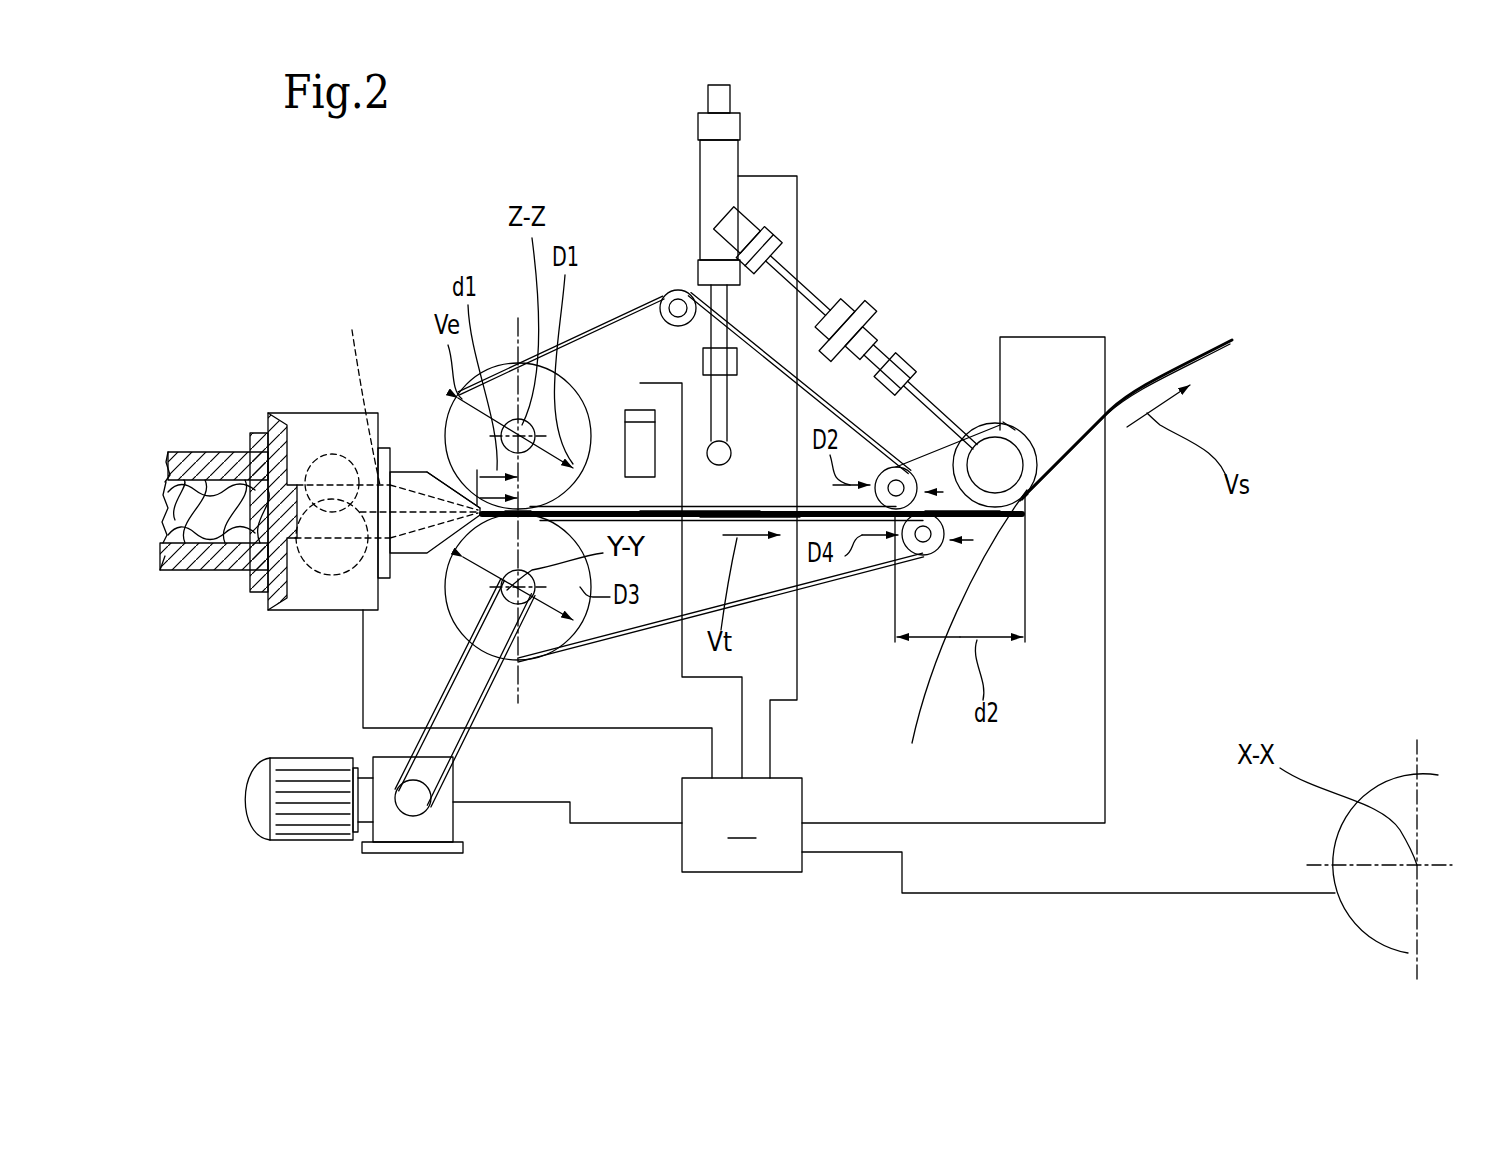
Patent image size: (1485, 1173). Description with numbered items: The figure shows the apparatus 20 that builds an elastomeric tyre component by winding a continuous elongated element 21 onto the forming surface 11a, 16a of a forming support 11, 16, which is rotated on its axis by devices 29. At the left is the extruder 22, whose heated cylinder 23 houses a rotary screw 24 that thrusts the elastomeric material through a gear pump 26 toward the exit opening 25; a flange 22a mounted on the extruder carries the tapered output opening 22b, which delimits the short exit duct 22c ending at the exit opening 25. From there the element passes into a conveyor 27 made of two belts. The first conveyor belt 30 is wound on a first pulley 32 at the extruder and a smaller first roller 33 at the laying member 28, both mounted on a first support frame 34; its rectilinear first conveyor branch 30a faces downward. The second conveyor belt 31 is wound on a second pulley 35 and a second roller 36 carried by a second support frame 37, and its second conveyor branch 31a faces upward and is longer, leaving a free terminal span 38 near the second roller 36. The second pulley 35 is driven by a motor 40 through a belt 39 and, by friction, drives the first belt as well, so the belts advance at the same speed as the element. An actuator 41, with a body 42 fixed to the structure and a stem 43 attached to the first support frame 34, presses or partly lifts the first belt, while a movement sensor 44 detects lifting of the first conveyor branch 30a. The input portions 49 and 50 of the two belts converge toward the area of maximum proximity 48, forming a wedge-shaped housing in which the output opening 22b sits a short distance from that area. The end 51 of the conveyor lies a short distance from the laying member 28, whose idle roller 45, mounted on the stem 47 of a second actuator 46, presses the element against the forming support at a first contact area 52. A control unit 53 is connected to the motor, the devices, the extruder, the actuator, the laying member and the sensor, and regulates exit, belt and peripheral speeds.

The apparatus 20 is at (297, 440).
The continuous elongated element 21 is at (977, 480).
The extruder 22 is at (313, 489).
The flange 22a is at (385, 575).
The output opening 22b is at (388, 608).
The exit duct 22c is at (349, 389).
The cylinder 23 is at (207, 535).
The rotary screw 24 is at (165, 512).
The exit opening 25 is at (455, 548).
The gear pump 26 is at (332, 467).
The conveyor 27 is at (612, 320).
The laying member 28 is at (703, 322).
The devices 29 is at (1385, 773).
The first conveyor belt 30 is at (770, 340).
The first conveyor branch 30a is at (703, 517).
The second conveyor belt 31 is at (721, 612).
The second conveyor branch 31a is at (763, 505).
The first pulley 32 is at (488, 347).
The first roller 33 is at (917, 343).
The first support frame 34 is at (648, 330).
The second pulley 35 is at (533, 667).
The second roller 36 is at (895, 560).
The second support frame 37 is at (766, 573).
The terminal span 38 is at (918, 506).
The belt 39 is at (462, 748).
The motor 40 is at (312, 840).
The actuator 41 is at (766, 266).
The body 42 is at (712, 160).
The stem 43 is at (846, 300).
The movement sensor 44 is at (633, 442).
The roller 45 is at (1005, 423).
The second actuator 46 is at (933, 440).
The stem 47 is at (957, 430).
The area of maximum proximity 48 is at (507, 528).
The first input portion 49 is at (457, 473).
The second input portion 50 is at (462, 522).
The end 51 is at (932, 503).
The first contact area 52 is at (1032, 500).
The control unit 53 is at (1008, 835).
The forming support 11 is at (862, 336).
The forming support 16 is at (1212, 345).
The forming surface 11a is at (920, 626).
The forming surface 16a is at (923, 688).